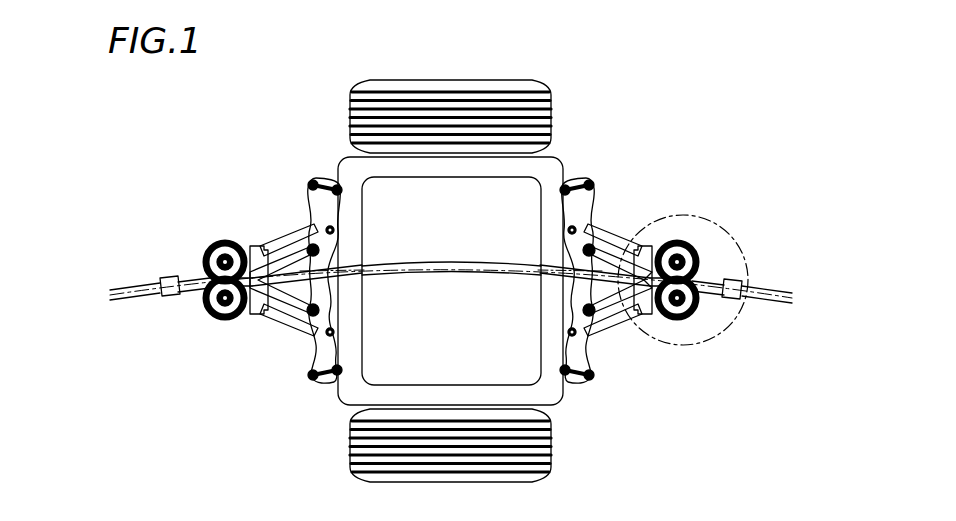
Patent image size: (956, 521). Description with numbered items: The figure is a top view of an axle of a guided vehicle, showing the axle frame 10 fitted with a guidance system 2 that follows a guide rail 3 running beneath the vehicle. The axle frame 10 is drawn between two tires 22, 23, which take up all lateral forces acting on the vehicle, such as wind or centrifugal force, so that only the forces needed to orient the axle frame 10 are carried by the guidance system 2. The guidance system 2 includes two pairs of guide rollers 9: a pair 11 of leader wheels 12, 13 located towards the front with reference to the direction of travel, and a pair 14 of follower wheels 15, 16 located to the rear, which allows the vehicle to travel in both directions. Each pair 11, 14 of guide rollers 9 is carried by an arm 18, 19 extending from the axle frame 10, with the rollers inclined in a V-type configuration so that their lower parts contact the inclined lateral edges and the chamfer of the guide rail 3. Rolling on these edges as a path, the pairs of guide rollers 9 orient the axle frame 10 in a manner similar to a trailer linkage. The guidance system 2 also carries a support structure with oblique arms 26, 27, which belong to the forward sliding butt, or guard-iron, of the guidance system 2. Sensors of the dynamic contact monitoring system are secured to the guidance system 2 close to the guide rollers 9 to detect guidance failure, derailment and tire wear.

The guidance system 2 is at (699, 68).
The guide rail 3 is at (134, 289).
The guide rollers 9 is at (456, 289).
The axle frame 10 is at (548, 160).
The pair of leader wheels 11 is at (700, 231).
The leader wheel 12 is at (667, 238).
The leader wheel 13 is at (676, 327).
The pair of follower wheels 14 is at (219, 233).
The follower wheel 15 is at (231, 238).
The follower wheel 16 is at (221, 327).
The arm 18 is at (312, 352).
The arm 19 is at (586, 349).
The tire 22 is at (503, 67).
The tire 23 is at (545, 484).
The oblique arm 26 is at (603, 231).
The oblique arm 27 is at (611, 328).